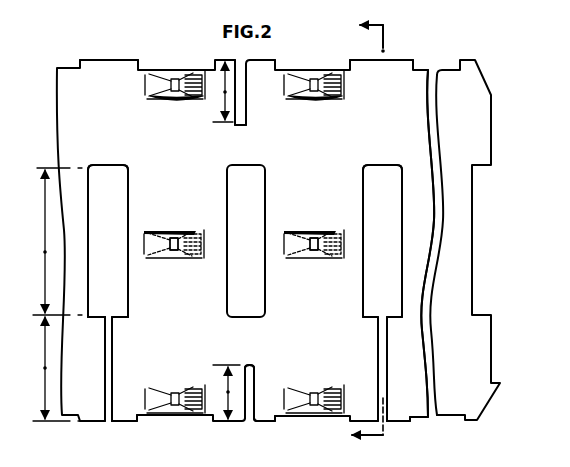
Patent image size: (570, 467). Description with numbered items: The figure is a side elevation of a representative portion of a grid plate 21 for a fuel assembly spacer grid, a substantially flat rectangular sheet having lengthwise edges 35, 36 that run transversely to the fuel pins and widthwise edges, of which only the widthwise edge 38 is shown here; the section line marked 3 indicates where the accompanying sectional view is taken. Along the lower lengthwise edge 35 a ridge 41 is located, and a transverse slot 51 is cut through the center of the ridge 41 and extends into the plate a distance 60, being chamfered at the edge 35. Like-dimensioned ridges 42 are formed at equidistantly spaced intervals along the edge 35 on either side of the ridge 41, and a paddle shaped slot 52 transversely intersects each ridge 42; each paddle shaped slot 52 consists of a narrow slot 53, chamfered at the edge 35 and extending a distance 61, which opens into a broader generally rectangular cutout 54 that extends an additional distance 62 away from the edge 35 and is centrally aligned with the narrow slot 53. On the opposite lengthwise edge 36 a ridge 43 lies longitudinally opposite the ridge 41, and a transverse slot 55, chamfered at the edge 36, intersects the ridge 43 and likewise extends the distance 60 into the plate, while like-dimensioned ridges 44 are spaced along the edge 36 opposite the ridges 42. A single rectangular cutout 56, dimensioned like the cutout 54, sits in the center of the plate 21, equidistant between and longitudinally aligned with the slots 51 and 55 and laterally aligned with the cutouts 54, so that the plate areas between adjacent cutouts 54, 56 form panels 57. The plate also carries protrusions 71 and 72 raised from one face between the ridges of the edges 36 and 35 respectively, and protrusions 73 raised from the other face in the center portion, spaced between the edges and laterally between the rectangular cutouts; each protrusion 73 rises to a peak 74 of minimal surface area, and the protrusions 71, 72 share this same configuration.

The grid plate 21 is at (88, 72).
The ridges 44 is at (123, 61).
The ridge 43 is at (268, 61).
The transverse slot 55 is at (246, 96).
The distance 60 is at (224, 92).
The protrusions 71 is at (156, 88).
The distance 62 is at (45, 252).
The distance 61 is at (45, 368).
The rectangular cutout 54 is at (96, 248).
The rectangular cutout 56 is at (234, 248).
The panels 57 is at (172, 197).
The protrusions 73 is at (197, 258).
The peak 74 is at (150, 238).
The paddle shaped slots 52 is at (106, 302).
The narrow slot 53 is at (112, 350).
The protrusions 72 is at (156, 392).
The transverse slot 51 is at (251, 382).
The ridges 42 is at (123, 425).
The ridge 41 is at (268, 425).
The lengthwise edge 36 is at (430, 70).
The widthwise edge 38 is at (492, 147).
The lengthwise edge 35 is at (420, 418).
The section line 3- 3 is at (357, 232).